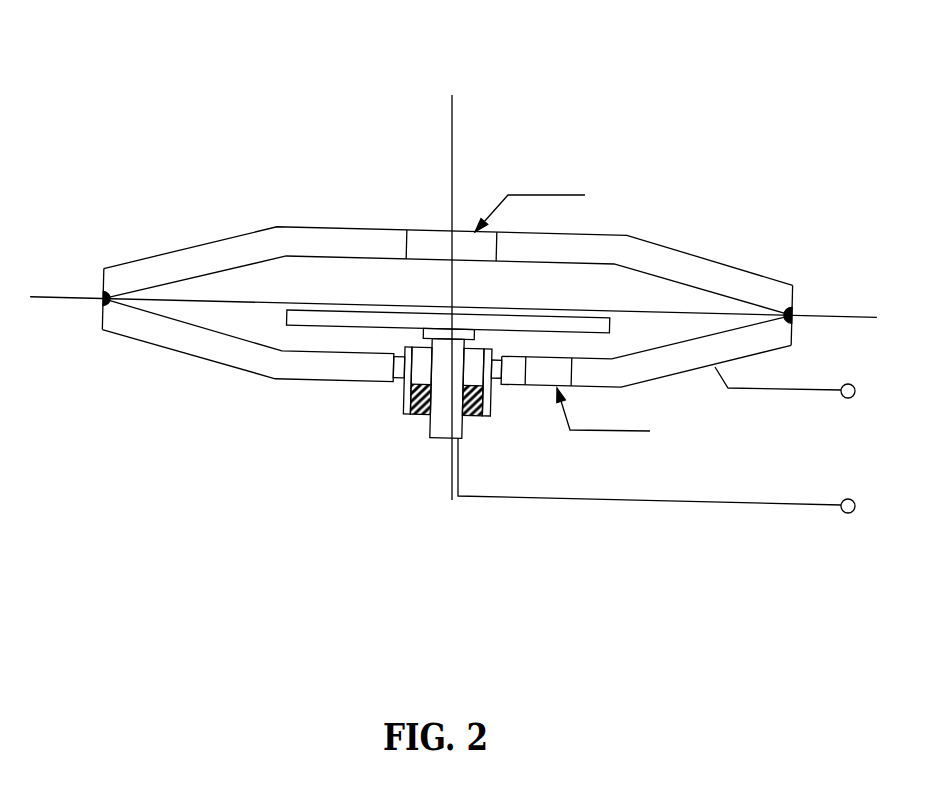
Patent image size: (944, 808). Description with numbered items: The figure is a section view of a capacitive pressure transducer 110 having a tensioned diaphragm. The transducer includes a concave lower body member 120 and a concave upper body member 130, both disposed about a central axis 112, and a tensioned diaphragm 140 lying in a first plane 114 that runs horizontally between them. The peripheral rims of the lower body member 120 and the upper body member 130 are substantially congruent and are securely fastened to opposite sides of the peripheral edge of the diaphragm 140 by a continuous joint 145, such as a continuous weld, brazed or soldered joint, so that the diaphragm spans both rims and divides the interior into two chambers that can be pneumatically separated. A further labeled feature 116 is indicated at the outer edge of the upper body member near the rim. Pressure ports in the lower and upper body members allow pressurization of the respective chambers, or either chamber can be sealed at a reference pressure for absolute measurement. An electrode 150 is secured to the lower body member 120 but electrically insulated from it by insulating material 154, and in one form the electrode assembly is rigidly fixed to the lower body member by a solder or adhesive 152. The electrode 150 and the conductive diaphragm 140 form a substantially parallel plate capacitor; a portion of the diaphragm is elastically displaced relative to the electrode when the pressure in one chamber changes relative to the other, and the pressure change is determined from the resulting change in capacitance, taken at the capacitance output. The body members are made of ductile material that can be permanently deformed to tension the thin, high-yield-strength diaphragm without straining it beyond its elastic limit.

The capacitive pressure transducer 110 is at (670, 102).
The central axis 112 is at (453, 117).
The first plane 114 is at (838, 315).
The sensor body end flexure 116 is at (181, 206).
The lower body member 120 is at (158, 347).
The upper body member 130 is at (448, 244).
The tensioned diaphragm 140 is at (453, 424).
The continuous joint 145 is at (98, 300).
The electrode 150 is at (415, 385).
The solder or adhesive 152 is at (383, 436).
The insulating material 154 is at (548, 419).